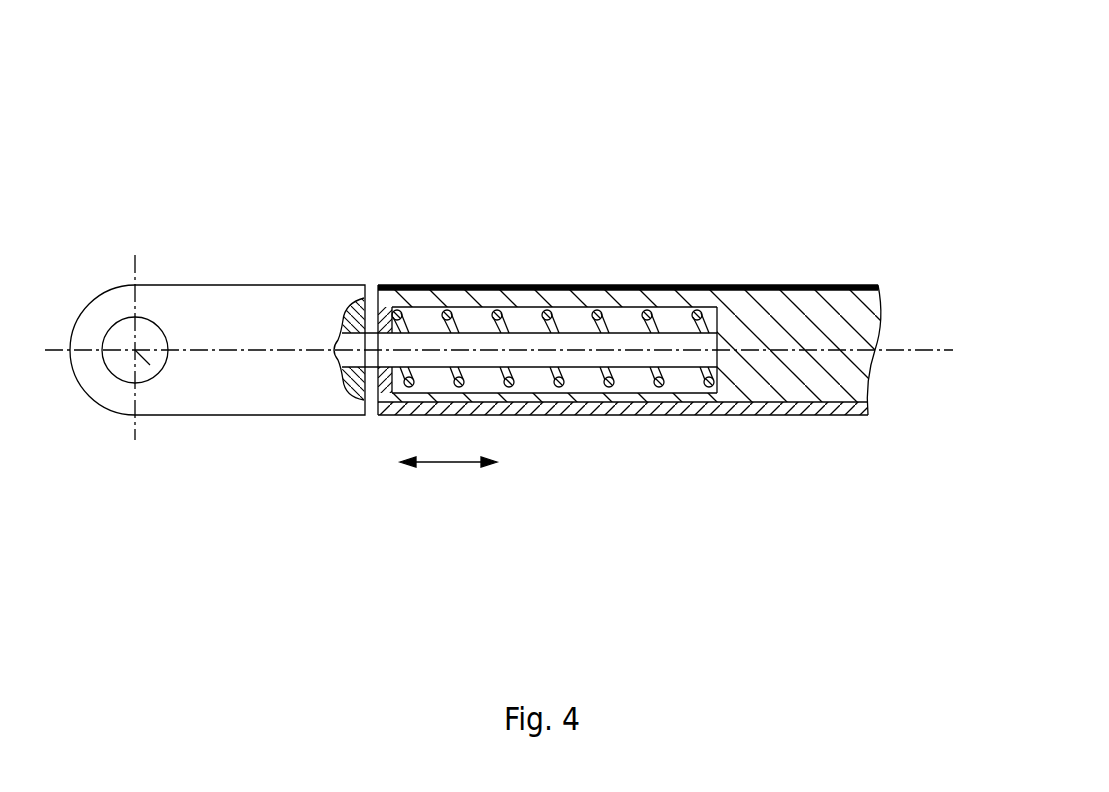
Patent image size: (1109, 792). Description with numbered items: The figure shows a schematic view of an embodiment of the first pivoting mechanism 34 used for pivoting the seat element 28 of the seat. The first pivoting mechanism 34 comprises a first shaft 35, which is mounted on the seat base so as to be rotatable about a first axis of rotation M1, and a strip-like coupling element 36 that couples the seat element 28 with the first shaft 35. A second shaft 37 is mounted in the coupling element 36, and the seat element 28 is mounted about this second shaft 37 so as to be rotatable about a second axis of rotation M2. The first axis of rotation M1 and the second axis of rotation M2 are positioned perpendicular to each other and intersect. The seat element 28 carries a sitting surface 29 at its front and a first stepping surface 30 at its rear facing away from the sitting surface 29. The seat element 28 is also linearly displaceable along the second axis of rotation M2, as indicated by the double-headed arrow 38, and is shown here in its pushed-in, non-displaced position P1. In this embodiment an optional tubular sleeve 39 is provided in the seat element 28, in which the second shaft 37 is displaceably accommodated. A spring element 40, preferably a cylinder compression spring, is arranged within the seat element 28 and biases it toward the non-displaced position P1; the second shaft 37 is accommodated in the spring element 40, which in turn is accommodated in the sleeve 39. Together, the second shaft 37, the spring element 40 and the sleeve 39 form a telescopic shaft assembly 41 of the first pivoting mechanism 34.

The seat element 28 is at (840, 285).
The sitting surface 29 is at (758, 285).
The first stepping surface 30 is at (772, 408).
The first pivoting mechanism 34 is at (788, 152).
The first shaft 35 is at (120, 330).
The coupling element 36 is at (265, 300).
The second shaft 37 is at (533, 342).
The double-headed arrow 38 is at (450, 465).
The sleeve 39 is at (490, 307).
The spring element 40 is at (467, 227).
The telescopic shaft assembly 41 is at (553, 256).
The non-displaced position P1 is at (404, 206).
The first axis of rotation M1 is at (158, 375).
The second axis of rotation M2 is at (916, 348).